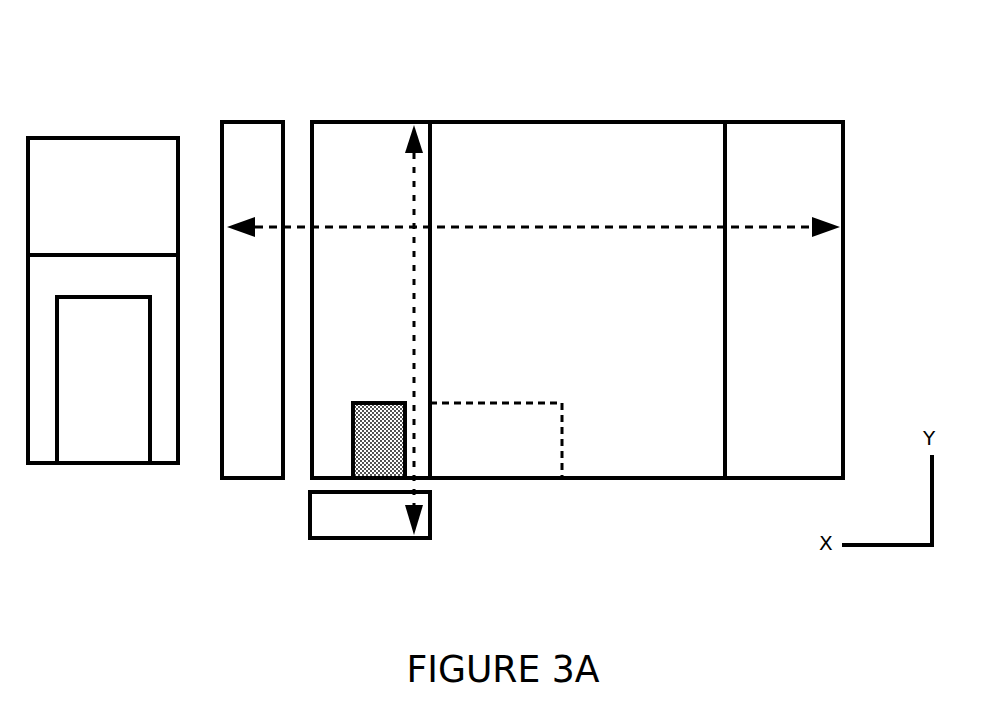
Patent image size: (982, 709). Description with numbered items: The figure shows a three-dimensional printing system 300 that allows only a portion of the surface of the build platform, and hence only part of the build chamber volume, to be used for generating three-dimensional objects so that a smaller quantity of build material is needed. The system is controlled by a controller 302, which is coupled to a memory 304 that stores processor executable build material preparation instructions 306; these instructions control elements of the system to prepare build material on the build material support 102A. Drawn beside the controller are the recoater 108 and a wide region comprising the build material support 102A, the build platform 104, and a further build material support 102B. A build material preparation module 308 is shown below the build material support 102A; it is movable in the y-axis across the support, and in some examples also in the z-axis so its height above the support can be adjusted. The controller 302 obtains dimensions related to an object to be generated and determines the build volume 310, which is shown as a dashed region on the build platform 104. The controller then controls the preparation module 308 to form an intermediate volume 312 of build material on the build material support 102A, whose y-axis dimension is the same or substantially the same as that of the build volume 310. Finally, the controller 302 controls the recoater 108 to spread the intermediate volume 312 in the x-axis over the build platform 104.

The 3D printing system 300 is at (300, 47).
The controller 302 is at (145, 134).
The memory 304 is at (162, 448).
The build material preparation instructions 306 is at (103, 448).
The recoater 108 is at (252, 155).
The build material support 102A is at (323, 125).
The build platform 104 is at (547, 153).
The build material support 102B is at (754, 153).
The build material preparation module 308 is at (370, 515).
The build volume 310 is at (497, 462).
The intermediate volume of build material 312 is at (396, 418).